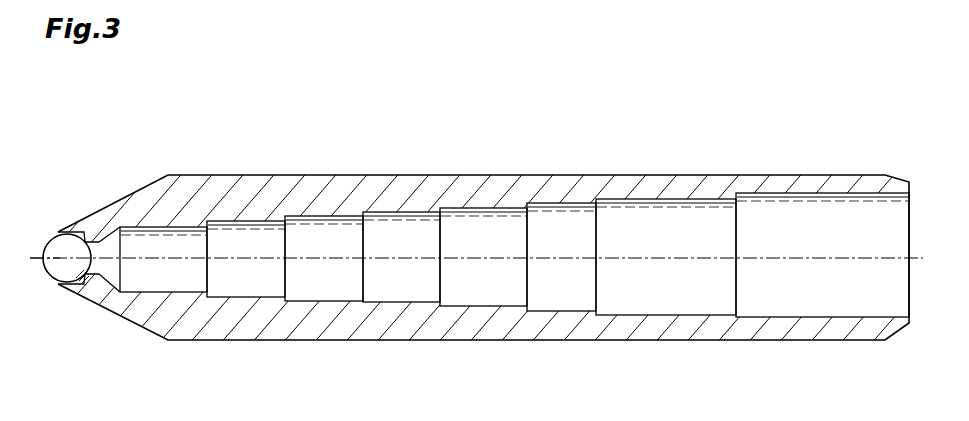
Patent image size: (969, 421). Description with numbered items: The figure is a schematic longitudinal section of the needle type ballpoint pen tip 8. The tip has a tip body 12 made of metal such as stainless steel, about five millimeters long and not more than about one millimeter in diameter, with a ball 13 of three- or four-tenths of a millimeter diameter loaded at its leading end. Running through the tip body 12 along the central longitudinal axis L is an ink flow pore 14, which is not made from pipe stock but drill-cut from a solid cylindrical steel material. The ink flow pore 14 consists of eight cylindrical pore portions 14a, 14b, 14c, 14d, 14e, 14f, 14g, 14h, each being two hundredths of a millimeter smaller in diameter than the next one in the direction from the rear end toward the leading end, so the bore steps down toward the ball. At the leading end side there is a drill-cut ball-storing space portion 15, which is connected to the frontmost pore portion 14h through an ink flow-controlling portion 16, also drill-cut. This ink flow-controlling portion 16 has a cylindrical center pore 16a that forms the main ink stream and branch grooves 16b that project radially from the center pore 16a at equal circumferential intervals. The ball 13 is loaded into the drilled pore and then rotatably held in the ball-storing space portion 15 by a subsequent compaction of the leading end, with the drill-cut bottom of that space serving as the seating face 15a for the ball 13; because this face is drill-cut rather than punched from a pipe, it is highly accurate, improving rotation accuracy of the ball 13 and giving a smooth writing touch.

The needle type ballpoint pen tip 8 is at (757, 126).
The tip body 12 is at (467, 187).
The ball 13 is at (53, 248).
The ink flow pore 14 is at (880, 371).
The pore portion 14a is at (818, 302).
The pore portion 14b is at (660, 301).
The pore portion 14c is at (572, 296).
The pore portion 14d is at (485, 291).
The pore portion 14e is at (401, 289).
The pore portion 14f is at (330, 287).
The pore portion 14g is at (250, 283).
The frontmost pore portion 14h is at (172, 280).
The ball-storing space portion 15 is at (67, 230).
The seating face 15a is at (85, 277).
The ink flow-controlling portion 16 is at (152, 163).
The center pore 16a is at (118, 228).
The branch grooves 16b is at (97, 230).
The central longitudinal axis L is at (35, 263).